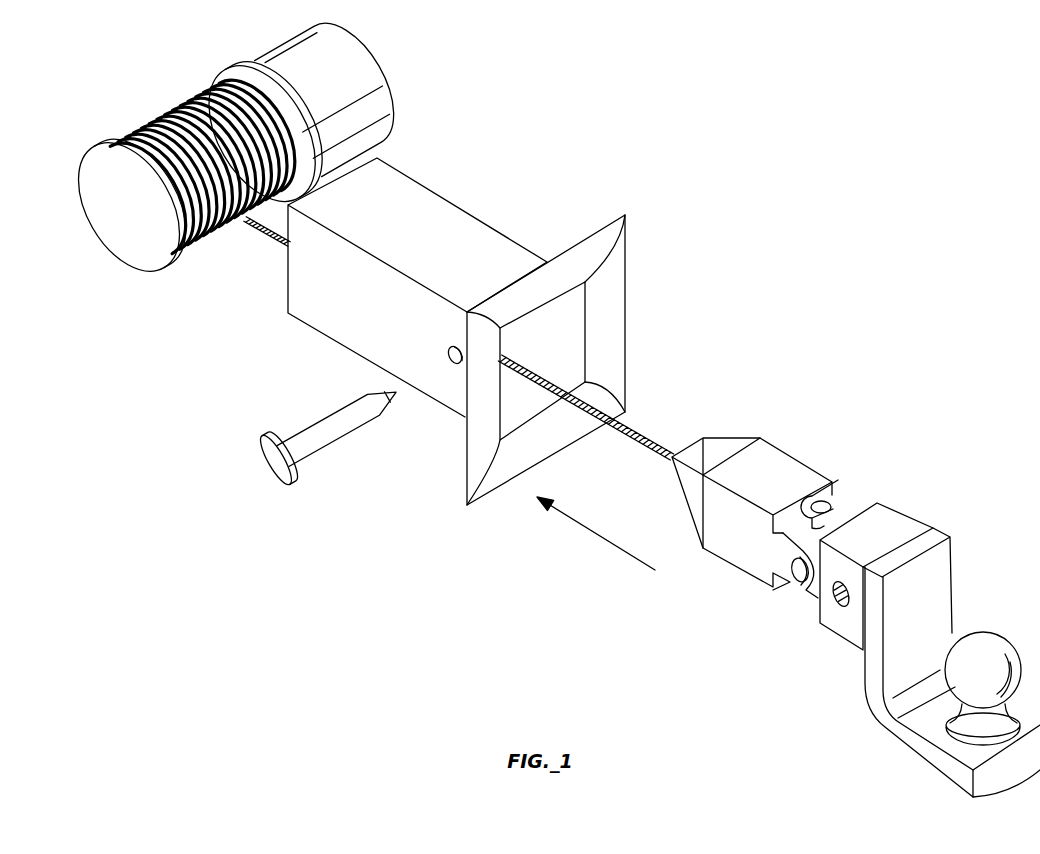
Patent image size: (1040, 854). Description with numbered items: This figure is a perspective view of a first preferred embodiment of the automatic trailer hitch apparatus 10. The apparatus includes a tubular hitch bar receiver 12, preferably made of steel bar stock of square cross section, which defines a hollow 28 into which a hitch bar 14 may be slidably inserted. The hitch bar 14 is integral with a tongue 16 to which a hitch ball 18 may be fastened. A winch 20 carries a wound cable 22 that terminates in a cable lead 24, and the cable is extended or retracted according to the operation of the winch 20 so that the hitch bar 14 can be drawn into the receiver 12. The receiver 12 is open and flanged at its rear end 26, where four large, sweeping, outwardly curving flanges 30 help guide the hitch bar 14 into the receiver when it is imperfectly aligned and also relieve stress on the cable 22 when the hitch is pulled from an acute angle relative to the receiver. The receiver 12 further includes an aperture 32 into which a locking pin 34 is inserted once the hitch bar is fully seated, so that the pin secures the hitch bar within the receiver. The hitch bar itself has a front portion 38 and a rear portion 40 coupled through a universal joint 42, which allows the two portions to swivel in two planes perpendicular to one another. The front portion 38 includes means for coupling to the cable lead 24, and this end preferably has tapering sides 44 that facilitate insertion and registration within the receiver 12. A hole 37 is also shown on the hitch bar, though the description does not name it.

The automatic trailer hitch apparatus 10 is at (722, 163).
The hitch bar receiver 12 is at (446, 213).
The hitch bar 14 is at (862, 476).
The tongue 16 is at (905, 745).
The hitch ball 18 is at (985, 642).
The winch 20 is at (363, 67).
The cable 22 is at (633, 437).
The cable lead 24 is at (668, 477).
The rear end 26 is at (457, 532).
The hollow 28 is at (570, 341).
The flanges 30 is at (582, 252).
The aperture 32 is at (450, 370).
The locking pin 34 is at (333, 418).
The pin aperture in mounting block 37 is at (837, 608).
The front portion 38 is at (777, 462).
The rear portion 40 is at (890, 522).
The universal joint 42 is at (797, 578).
The tapering sides 44 is at (717, 443).